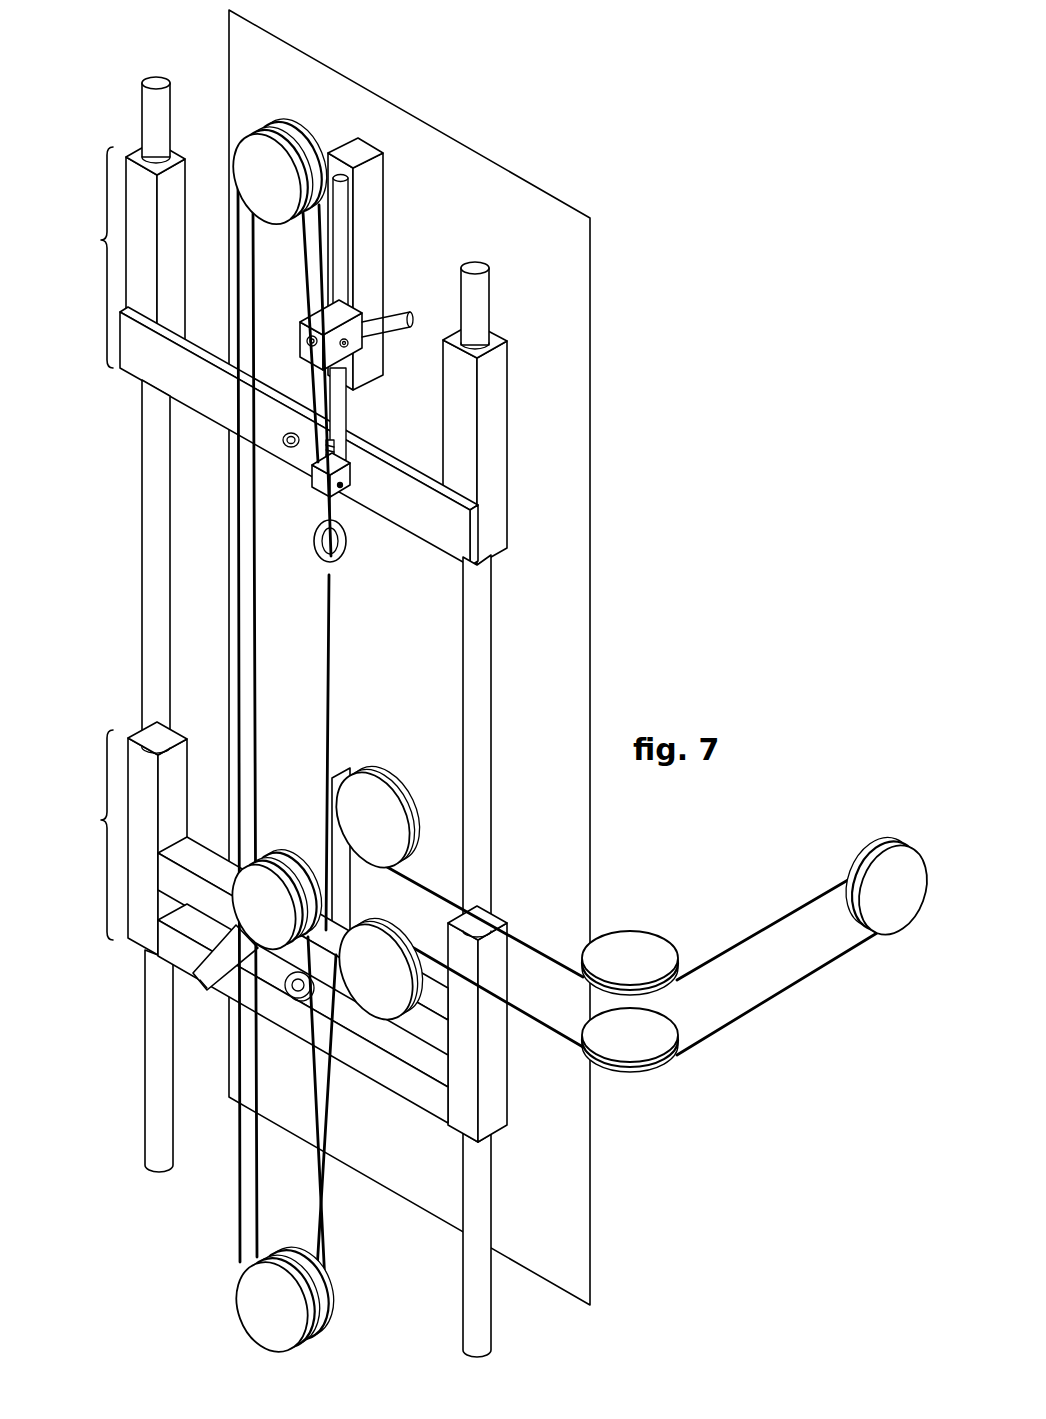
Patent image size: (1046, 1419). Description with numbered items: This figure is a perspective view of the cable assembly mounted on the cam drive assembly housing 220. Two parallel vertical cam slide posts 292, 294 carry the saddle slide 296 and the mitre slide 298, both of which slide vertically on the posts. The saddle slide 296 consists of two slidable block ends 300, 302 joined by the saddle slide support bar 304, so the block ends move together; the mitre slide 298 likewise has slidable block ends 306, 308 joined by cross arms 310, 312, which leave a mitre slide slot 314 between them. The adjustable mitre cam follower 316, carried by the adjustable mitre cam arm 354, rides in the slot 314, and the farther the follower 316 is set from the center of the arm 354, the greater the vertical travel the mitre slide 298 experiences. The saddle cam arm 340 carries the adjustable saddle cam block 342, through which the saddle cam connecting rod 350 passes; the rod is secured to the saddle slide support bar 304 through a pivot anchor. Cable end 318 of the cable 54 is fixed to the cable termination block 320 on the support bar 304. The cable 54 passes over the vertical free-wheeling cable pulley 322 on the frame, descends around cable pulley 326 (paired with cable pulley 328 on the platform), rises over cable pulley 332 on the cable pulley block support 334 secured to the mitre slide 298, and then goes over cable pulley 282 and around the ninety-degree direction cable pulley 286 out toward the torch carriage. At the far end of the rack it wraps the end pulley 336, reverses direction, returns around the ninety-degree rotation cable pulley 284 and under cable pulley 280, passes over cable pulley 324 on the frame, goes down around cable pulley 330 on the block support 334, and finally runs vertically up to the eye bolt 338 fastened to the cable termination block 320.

The cable 54 is at (778, 990).
The cam drive assembly housing 220 is at (402, 665).
The cable pulley 280 is at (388, 830).
The cable pulley 282 is at (381, 969).
The 90° rotation cable pulley 284 is at (643, 971).
The 90° direction cable pulley 286 is at (643, 1046).
The cam slide post 292 is at (146, 643).
The cam slide post 294 is at (492, 713).
The saddle slide 296 is at (85, 257).
The mitre slide 298 is at (87, 835).
The slidable block end 300 is at (150, 290).
The slidable block end 302 is at (498, 451).
The saddle slide support bar 304 is at (270, 436).
The slidable block end 306 is at (145, 797).
The slidable block end 308 is at (478, 1077).
The cross arm 310 is at (198, 894).
The cross arm 312 is at (398, 1077).
The mitre slide slot 314 is at (187, 932).
The adjustable mitre cam follower 316 is at (298, 1002).
The cable end 318 is at (344, 494).
The cable termination block 320 is at (343, 475).
The cable pulley 322 is at (287, 169).
The cable pulley 324 is at (278, 187).
The cable pulley 326 is at (284, 1290).
The cable pulley 328 is at (300, 1242).
The cable pulley 330 is at (277, 886).
The cable pulley 332 is at (278, 916).
The cable pulley block support 334 is at (207, 990).
The end pulley 336 is at (893, 918).
The eye bolt 338 is at (341, 548).
The saddle cam arm 340 is at (372, 201).
The adjustable saddle cam block 342 is at (304, 333).
The saddle cam connecting rod 350 is at (346, 238).
The adjustable mitre cam arm 354 is at (380, 896).